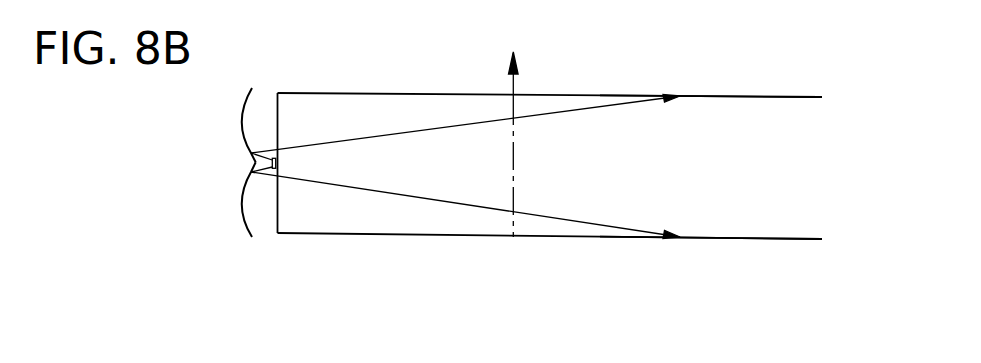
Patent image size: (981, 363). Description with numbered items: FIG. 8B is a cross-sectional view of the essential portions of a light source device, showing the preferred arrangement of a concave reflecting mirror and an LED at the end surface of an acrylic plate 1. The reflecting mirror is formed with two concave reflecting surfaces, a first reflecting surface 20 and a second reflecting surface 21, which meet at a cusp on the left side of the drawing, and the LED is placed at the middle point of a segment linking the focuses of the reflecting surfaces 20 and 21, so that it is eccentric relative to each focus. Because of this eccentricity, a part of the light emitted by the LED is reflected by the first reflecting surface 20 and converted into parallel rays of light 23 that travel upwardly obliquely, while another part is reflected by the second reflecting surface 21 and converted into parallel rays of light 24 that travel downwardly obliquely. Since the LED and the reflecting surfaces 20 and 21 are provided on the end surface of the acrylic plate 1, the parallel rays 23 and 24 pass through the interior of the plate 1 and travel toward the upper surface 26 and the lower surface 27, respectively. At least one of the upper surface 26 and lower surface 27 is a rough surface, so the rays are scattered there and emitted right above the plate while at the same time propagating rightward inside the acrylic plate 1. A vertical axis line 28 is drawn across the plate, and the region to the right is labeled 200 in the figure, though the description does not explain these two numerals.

The acrylic plate 1 is at (728, 77).
The first reflecting surface 20 is at (242, 113).
The second reflecting surface 21 is at (242, 218).
The parallel rays of light 23 is at (465, 124).
The parallel rays of light 24 is at (465, 205).
The upper surface 26 is at (783, 97).
The lower surface 27 is at (783, 239).
The optical axis 28 is at (514, 132).
The light guide plate 200 is at (778, 164).